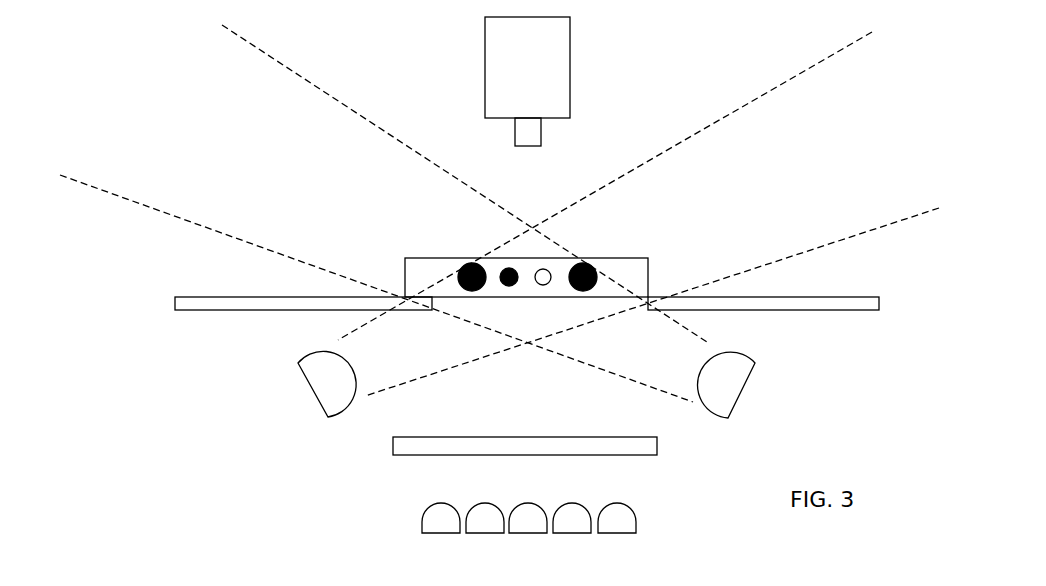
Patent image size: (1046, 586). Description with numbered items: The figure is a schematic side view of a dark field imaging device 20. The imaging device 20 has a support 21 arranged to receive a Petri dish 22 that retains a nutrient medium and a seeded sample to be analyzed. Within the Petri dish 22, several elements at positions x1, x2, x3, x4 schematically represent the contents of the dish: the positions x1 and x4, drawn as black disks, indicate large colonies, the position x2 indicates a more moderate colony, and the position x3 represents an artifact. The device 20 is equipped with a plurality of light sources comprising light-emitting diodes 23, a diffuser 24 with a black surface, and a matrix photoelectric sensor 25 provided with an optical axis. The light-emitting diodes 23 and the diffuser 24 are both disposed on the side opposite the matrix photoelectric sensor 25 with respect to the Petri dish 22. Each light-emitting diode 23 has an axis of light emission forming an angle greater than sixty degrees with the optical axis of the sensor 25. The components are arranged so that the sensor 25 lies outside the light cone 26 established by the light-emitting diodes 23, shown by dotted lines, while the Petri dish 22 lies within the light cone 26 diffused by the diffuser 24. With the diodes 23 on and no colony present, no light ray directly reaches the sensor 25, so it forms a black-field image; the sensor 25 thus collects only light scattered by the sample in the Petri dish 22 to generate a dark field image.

The dark field imaging device 20 is at (235, 488).
The support 21 is at (195, 300).
The Petri dish 22 is at (645, 270).
The light-emitting diodes 23 is at (313, 402).
The diffuser 24 is at (393, 447).
The matrix photoelectric sensor 25 is at (484, 60).
The light cone 26 is at (768, 80).
The position x1 is at (472, 291).
The position x2 is at (509, 286).
The position x3 is at (543, 285).
The position x4 is at (583, 291).